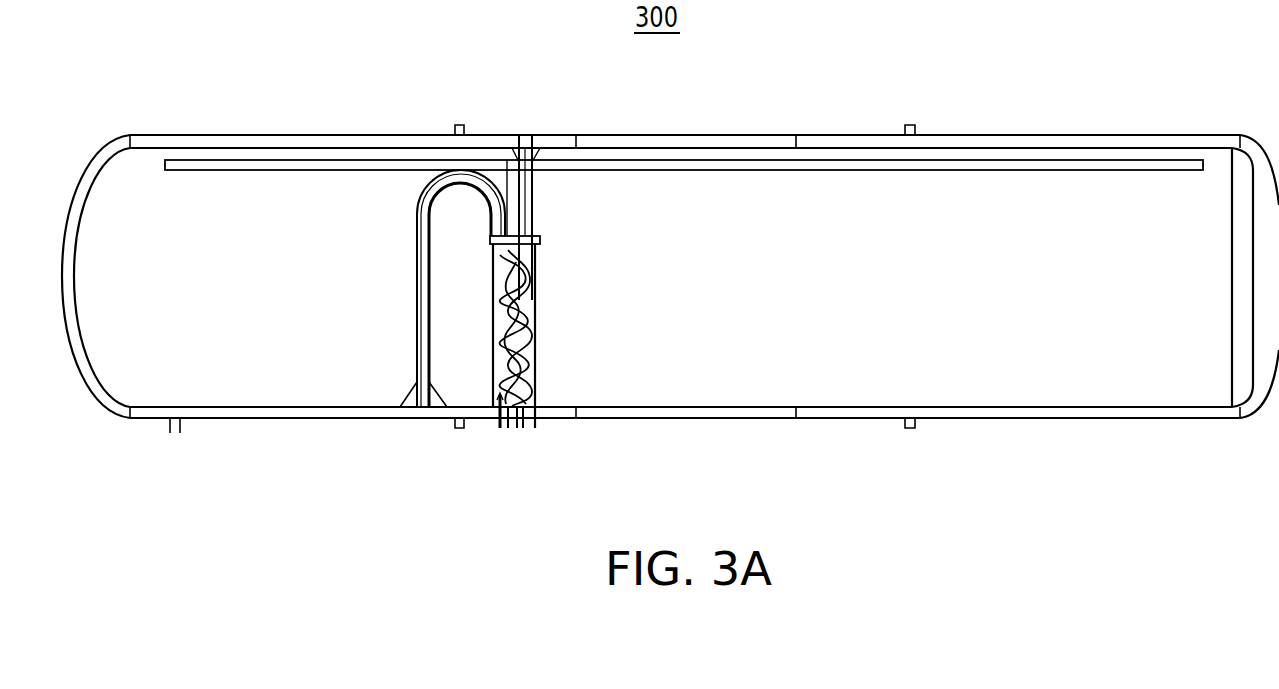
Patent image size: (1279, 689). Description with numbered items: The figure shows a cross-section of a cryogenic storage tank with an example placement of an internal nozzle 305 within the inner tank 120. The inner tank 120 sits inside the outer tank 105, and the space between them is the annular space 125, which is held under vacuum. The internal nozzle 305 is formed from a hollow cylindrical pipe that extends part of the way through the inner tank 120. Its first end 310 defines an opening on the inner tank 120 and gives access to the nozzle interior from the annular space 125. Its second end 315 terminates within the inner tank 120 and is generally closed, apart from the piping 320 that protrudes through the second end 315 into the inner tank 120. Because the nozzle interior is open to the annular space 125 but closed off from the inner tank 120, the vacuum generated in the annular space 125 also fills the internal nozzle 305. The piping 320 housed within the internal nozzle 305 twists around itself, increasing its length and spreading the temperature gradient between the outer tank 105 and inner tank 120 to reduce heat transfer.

The outer tank 105 is at (968, 135).
The inner tank 120 is at (1035, 152).
The annular space 125 is at (1148, 146).
The internal nozzle 305 is at (537, 280).
The first end 310 is at (537, 420).
The second end 315 is at (540, 234).
The piping 320 is at (537, 340).